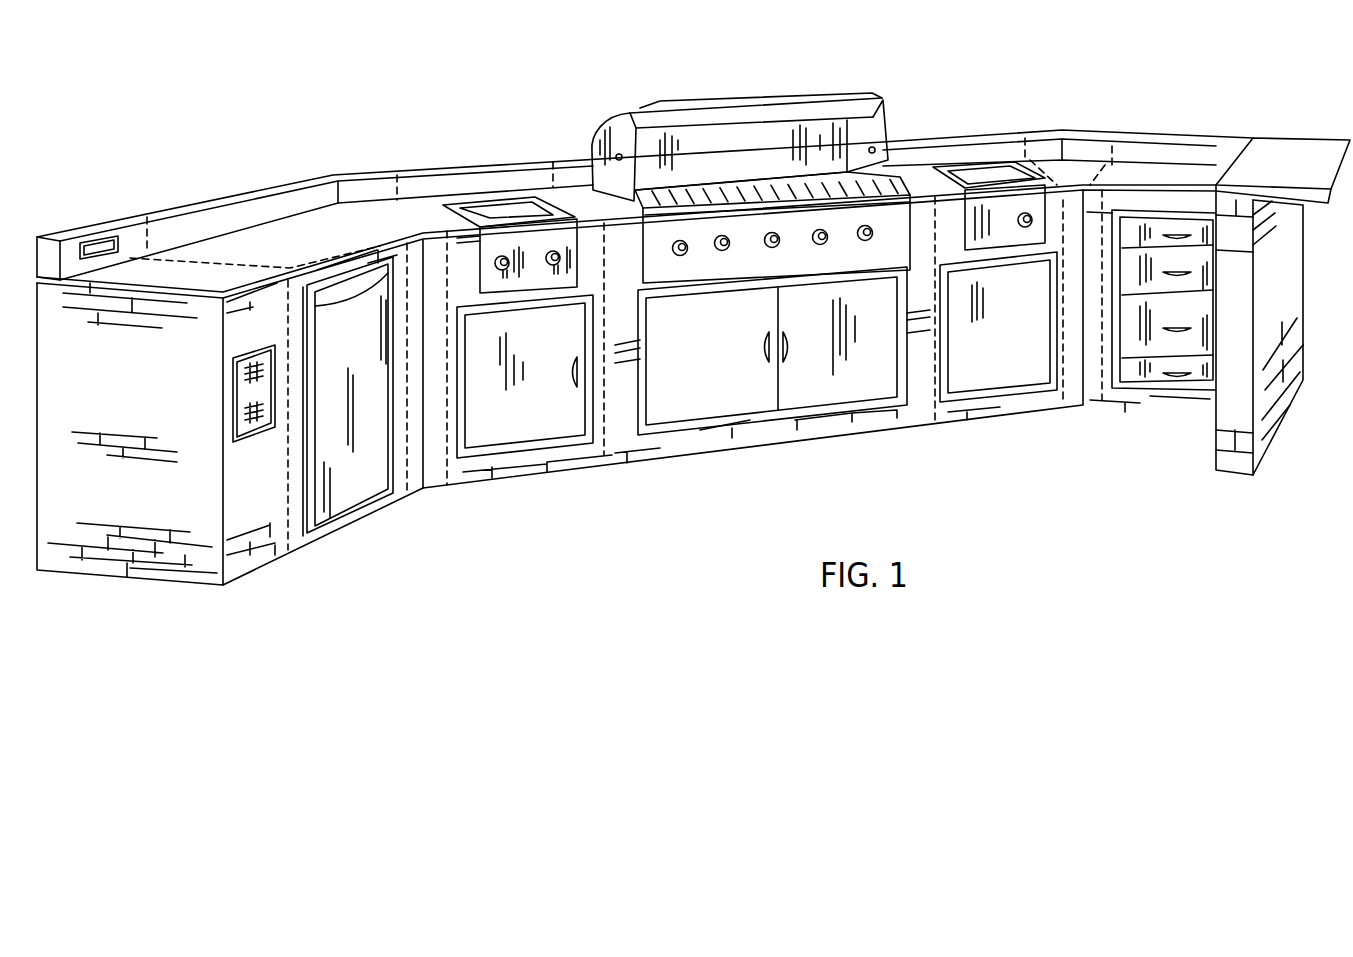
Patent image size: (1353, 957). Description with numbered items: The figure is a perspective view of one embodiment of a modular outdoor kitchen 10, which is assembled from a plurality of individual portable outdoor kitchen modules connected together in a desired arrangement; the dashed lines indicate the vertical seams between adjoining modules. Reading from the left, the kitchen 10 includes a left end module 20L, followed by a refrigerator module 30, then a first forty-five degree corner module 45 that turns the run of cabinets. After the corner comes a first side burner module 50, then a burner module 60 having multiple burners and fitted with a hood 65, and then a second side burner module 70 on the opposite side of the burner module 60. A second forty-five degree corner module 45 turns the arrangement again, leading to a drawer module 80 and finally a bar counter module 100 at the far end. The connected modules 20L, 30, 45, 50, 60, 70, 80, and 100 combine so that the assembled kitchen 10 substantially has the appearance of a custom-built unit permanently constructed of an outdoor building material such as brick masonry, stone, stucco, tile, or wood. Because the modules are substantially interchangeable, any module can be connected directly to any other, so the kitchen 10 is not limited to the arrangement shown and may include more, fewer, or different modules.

The modular outdoor kitchen 10 is at (396, 96).
The left end module 20L is at (88, 231).
The refrigerator module 30 is at (228, 194).
The forty-five degree corner module 45 is at (347, 171).
The first side burner module 50 is at (490, 163).
The burner module 60 is at (737, 232).
The hood 65 is at (813, 93).
The second side burner module 70 is at (965, 136).
The drawer module 80 is at (1173, 132).
The bar counter module 100 is at (1280, 140).